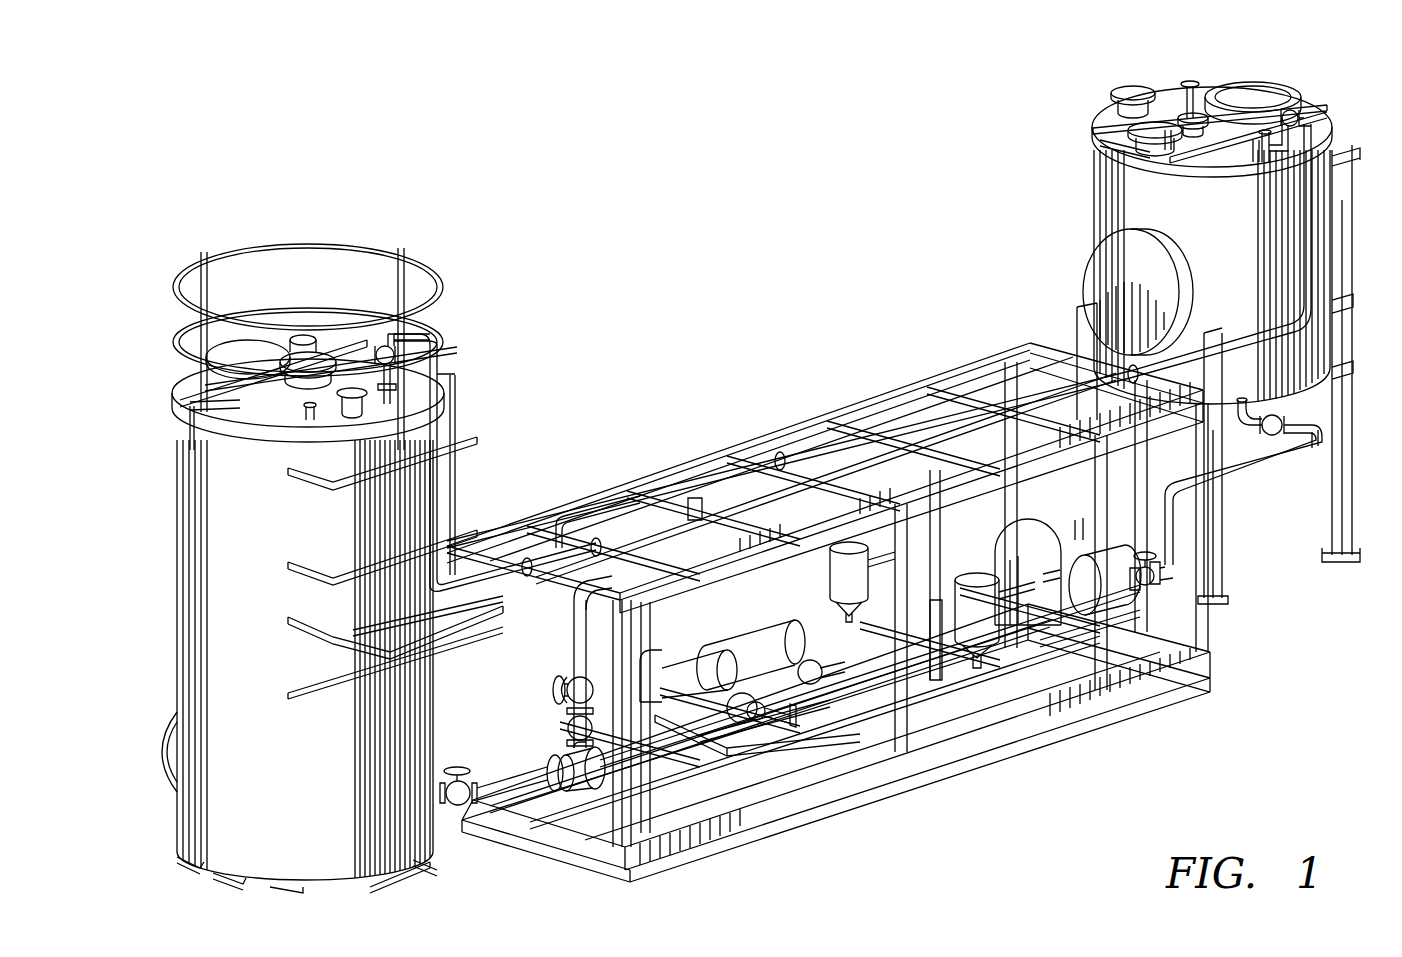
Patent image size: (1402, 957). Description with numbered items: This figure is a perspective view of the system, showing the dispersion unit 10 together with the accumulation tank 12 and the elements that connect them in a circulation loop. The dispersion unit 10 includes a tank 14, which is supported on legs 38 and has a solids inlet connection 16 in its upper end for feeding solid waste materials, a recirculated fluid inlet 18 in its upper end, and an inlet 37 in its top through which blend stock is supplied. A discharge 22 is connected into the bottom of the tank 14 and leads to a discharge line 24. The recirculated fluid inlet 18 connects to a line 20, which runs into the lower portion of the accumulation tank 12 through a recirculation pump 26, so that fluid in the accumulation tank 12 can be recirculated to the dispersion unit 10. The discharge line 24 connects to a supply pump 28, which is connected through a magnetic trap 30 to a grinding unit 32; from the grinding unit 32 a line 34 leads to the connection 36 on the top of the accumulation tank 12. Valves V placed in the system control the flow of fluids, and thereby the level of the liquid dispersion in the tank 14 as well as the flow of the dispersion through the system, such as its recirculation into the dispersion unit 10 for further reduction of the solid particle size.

The dispersion unit 10 is at (1342, 252).
The accumulation tank 12 is at (172, 558).
The tank 14 is at (1092, 204).
The solids inlet connection 16 is at (1255, 90).
The recirculated fluid inlet 18 is at (1266, 145).
The line 20 is at (1246, 340).
The discharge 22 is at (1244, 410).
The discharge line 24 is at (1246, 468).
The recirculation pump 26 is at (556, 690).
The supply pump 28 is at (996, 548).
The magnetic trap 30 is at (966, 582).
The grinding unit 32 is at (683, 676).
The line 34 is at (440, 360).
The connection 36 is at (395, 398).
The inlet 37 is at (1122, 86).
The legs 38 is at (1078, 320).
The valves V is at (382, 348).